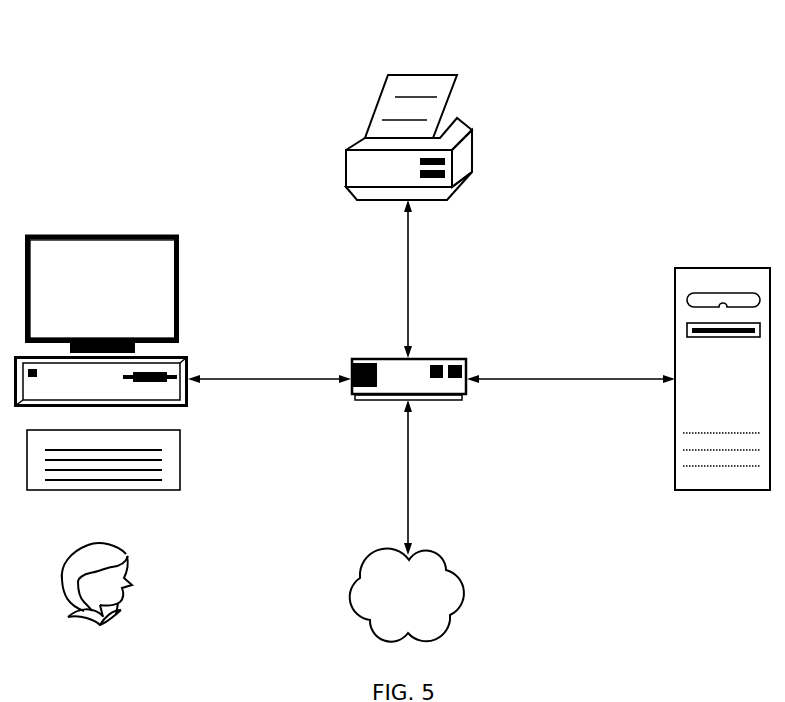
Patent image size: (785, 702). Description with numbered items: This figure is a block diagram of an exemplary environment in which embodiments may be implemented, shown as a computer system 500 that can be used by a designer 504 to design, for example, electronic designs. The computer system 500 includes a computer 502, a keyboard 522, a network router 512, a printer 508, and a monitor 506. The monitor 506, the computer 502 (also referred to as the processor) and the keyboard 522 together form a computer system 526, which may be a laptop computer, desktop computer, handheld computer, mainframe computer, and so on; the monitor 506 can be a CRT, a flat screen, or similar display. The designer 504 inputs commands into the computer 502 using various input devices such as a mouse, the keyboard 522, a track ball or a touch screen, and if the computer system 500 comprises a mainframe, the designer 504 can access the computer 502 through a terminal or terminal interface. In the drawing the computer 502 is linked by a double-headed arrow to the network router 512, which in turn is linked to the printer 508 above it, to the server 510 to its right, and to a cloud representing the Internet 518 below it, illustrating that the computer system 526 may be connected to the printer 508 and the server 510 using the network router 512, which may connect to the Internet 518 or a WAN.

The computer system 500 is at (658, 143).
The computer 502 is at (188, 359).
The designer 504 is at (120, 546).
The monitor 506 is at (180, 233).
The printer 508 is at (346, 177).
The server 510 is at (673, 470).
The network router 512 is at (432, 358).
The Internet 518 is at (440, 550).
The keyboard 522 is at (181, 458).
The computer system 526 is at (185, 284).